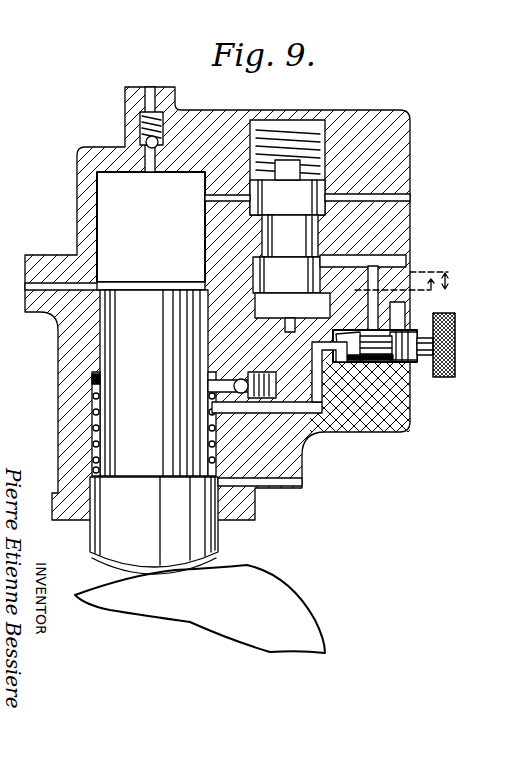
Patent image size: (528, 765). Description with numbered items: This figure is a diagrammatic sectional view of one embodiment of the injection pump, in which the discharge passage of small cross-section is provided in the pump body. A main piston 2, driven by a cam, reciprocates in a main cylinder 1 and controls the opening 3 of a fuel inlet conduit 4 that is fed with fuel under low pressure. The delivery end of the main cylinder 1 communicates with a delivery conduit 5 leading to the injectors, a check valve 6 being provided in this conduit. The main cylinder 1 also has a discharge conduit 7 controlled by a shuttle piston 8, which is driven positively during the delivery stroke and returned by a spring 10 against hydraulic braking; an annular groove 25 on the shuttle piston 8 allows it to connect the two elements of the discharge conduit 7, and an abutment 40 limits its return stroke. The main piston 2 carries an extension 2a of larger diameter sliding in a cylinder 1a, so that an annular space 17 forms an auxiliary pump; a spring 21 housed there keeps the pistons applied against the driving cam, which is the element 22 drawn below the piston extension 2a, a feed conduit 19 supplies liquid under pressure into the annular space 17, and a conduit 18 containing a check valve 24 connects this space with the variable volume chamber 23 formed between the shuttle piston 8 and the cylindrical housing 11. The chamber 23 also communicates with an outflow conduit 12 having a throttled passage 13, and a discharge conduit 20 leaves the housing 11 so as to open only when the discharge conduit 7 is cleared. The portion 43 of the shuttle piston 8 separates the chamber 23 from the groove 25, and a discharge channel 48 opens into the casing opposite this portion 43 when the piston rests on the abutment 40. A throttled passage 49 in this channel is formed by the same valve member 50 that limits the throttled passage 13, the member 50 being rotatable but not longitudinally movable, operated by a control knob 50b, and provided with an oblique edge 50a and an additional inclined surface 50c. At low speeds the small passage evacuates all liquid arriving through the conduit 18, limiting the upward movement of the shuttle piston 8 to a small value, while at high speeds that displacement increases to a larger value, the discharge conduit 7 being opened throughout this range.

The main cylinder 1 is at (149, 241).
The cylinder 1a is at (94, 470).
The main piston 2 is at (147, 339).
The extension 2a is at (148, 520).
The opening 3 is at (100, 283).
The fuel inlet conduit 4 is at (30, 284).
The delivery conduit 5 is at (150, 100).
The check valve 6 is at (146, 142).
The discharge conduit 7 is at (230, 198).
The shuttle piston 8 is at (288, 205).
The spring 10 is at (283, 138).
The cylindrical housing 11 is at (332, 308).
The outflow conduit 12 is at (318, 393).
The throttled passage 13 is at (447, 372).
The annular space 17 is at (92, 413).
The conduit 18 is at (287, 387).
The feed conduit 19 is at (290, 481).
The discharge conduit 20 is at (372, 262).
The spring 21 is at (92, 389).
The workpiece 22 is at (273, 585).
The variable volume chamber 23 is at (294, 316).
The check valve 24 is at (208, 386).
The annular groove 25 is at (315, 228).
The abutment 40 is at (252, 300).
The portion 43 is at (292, 282).
The discharge channel 48 is at (377, 278).
The throttled passage 49 is at (405, 333).
The valve member 50 is at (400, 352).
The oblique edge 50a is at (392, 362).
The control knob 50b is at (425, 352).
The inclined surface 50c is at (388, 356).